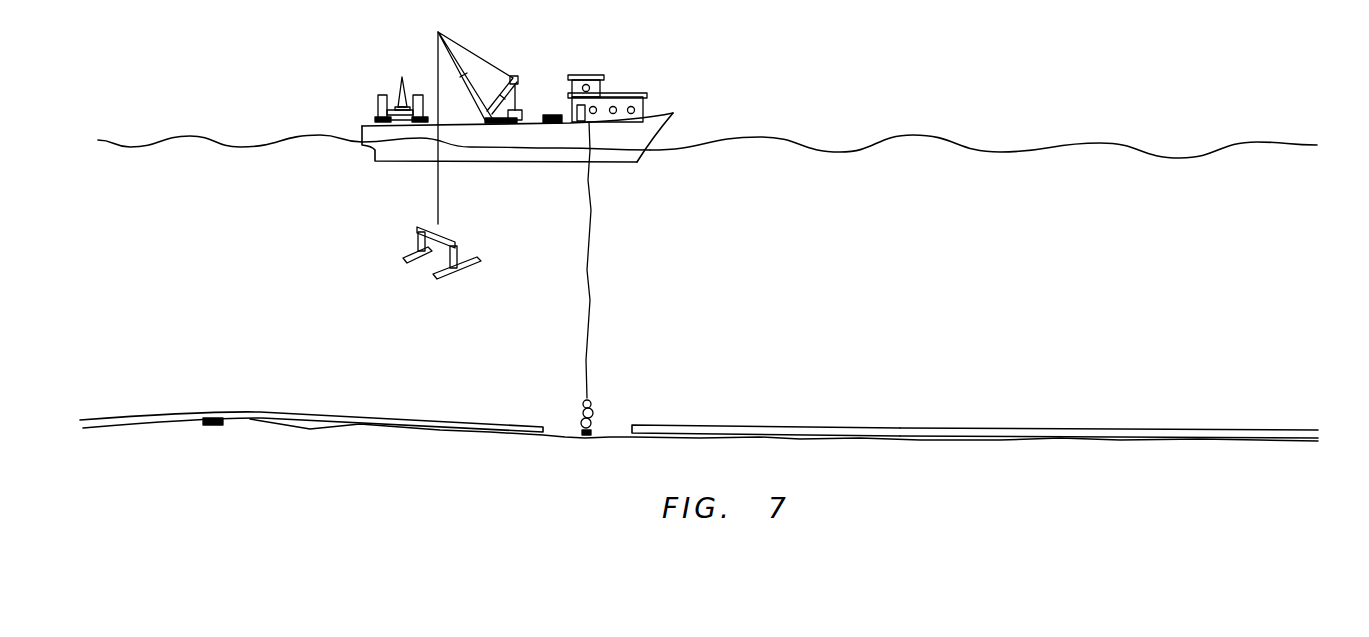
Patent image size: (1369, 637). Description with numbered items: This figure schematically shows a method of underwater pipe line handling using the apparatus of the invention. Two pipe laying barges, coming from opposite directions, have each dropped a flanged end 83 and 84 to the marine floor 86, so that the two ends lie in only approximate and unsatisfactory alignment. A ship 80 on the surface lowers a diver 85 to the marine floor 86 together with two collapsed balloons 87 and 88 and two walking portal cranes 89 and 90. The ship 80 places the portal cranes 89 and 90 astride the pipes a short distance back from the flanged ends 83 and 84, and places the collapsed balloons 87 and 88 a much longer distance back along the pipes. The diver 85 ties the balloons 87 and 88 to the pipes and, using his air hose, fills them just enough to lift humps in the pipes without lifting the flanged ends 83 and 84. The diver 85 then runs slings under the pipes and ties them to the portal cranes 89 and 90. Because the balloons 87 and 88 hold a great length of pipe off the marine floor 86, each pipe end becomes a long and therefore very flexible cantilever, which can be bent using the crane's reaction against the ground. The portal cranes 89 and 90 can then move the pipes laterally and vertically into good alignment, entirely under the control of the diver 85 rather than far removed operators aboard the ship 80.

The ship 80 is at (647, 128).
The flanged end 83 is at (543, 423).
The flanged end 84 is at (632, 425).
The diver 85 is at (605, 278).
The marine floor 86 is at (903, 430).
The collapsed balloon 87 is at (213, 418).
The collapsed balloon 88 is at (541, 115).
The walking portal crane 89 is at (467, 258).
The walking portal crane 90 is at (378, 103).